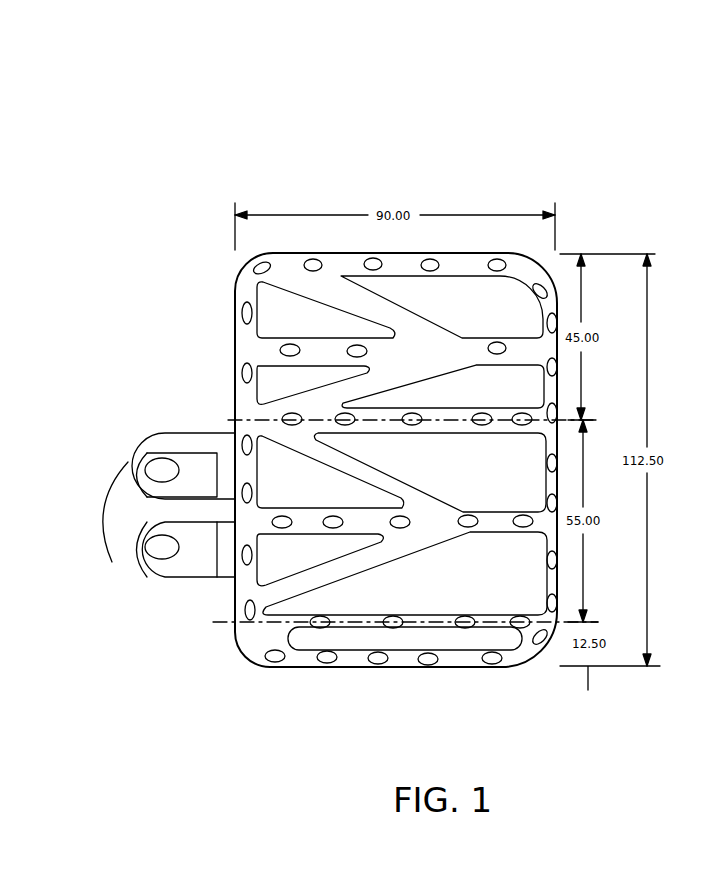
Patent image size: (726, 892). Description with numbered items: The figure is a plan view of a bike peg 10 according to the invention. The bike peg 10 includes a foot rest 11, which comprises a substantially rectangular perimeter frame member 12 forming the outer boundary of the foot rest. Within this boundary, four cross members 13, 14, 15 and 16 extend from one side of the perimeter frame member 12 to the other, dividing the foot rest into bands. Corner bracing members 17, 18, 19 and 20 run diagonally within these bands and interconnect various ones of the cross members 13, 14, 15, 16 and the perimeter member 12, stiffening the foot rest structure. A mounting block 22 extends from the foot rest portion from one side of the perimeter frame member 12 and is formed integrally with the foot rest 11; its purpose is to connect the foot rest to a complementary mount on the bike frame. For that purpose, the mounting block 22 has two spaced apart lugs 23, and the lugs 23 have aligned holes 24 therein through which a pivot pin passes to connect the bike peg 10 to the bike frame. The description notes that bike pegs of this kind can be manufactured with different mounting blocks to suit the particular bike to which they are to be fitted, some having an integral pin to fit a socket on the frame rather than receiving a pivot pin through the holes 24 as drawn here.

The bike peg 10 is at (618, 149).
The foot rest 11 is at (455, 262).
The perimeter frame member 12 is at (362, 666).
The cross member 13 is at (354, 621).
The cross member 14 is at (508, 520).
The cross member 15 is at (474, 422).
The cross member 16 is at (501, 354).
The corner bracing member 17 is at (346, 299).
The corner bracing member 18 is at (330, 393).
The corner bracing member 19 is at (340, 458).
The corner bracing member 20 is at (321, 563).
The mounting block 22 is at (228, 568).
The lugs 23 is at (143, 436).
The holes 24 is at (162, 468).